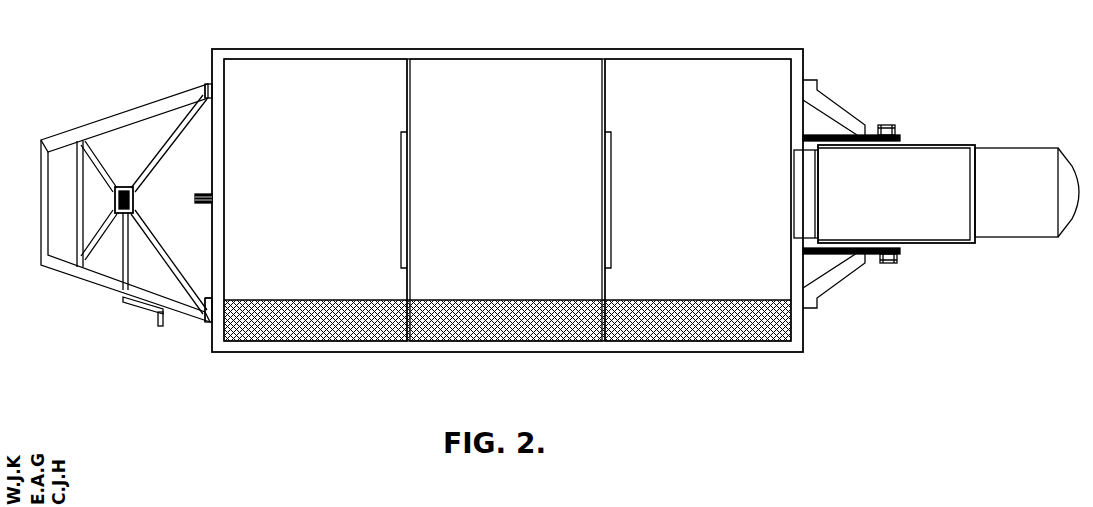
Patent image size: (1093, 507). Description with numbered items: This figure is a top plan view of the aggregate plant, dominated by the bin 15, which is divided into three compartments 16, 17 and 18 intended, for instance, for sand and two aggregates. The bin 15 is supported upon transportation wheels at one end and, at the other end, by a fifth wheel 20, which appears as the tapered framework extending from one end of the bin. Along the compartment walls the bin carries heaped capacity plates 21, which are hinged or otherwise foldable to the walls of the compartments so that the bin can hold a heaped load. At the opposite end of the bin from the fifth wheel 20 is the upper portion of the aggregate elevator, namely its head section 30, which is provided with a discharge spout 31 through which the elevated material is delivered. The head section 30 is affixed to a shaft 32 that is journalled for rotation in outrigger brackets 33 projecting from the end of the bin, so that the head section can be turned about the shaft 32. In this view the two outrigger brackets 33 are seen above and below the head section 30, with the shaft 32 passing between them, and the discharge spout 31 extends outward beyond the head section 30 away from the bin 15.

The bin 15 is at (490, 48).
The compartment 16 is at (309, 194).
The compartment 17 is at (507, 194).
The compartment 18 is at (700, 194).
The fifth wheel 20 is at (91, 272).
The heaped capacity plates 21 is at (606, 240).
The head section 30 is at (905, 201).
The discharge spout 31 is at (1042, 223).
The shaft 32 is at (887, 263).
The outrigger brackets 33 is at (862, 93).